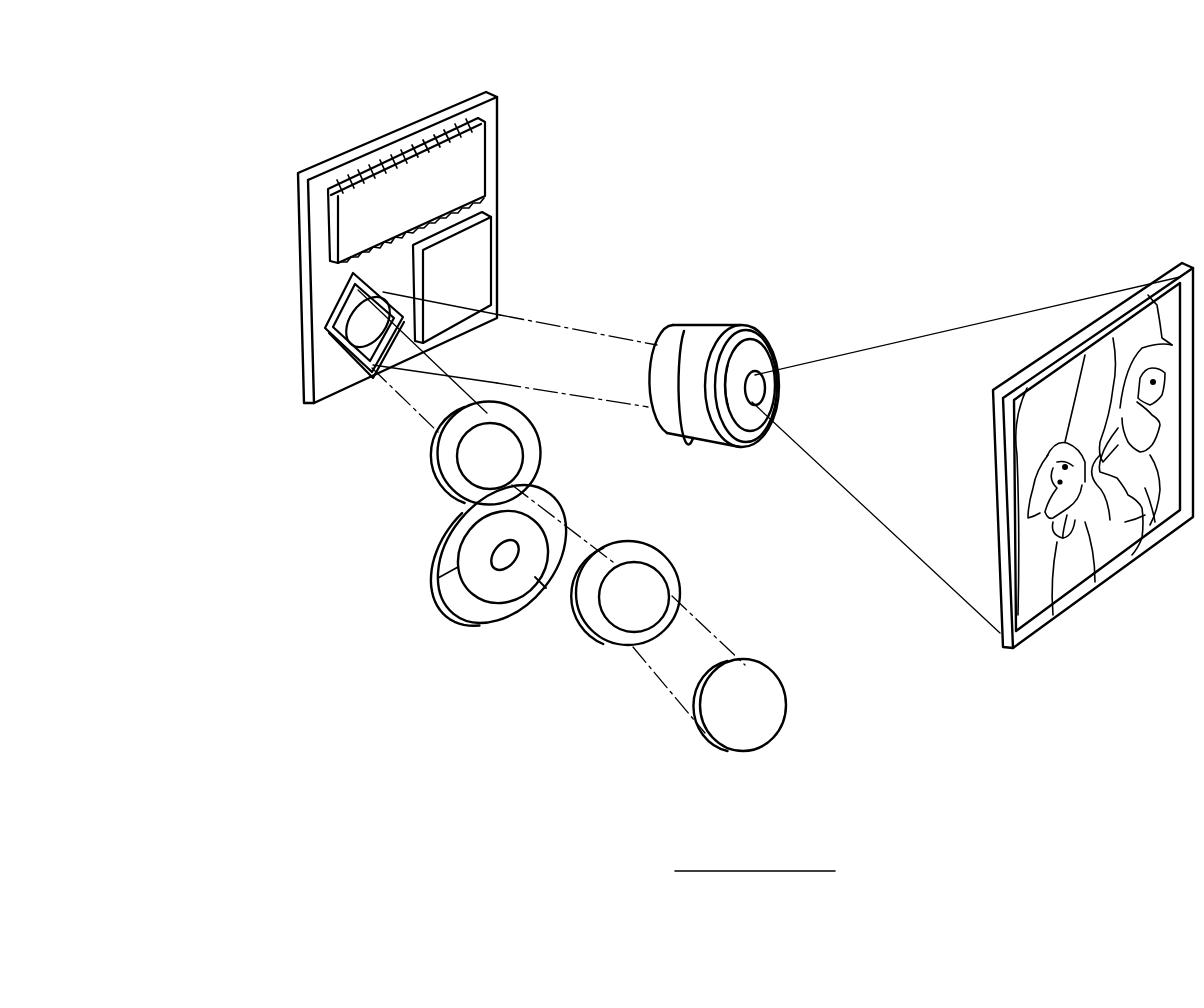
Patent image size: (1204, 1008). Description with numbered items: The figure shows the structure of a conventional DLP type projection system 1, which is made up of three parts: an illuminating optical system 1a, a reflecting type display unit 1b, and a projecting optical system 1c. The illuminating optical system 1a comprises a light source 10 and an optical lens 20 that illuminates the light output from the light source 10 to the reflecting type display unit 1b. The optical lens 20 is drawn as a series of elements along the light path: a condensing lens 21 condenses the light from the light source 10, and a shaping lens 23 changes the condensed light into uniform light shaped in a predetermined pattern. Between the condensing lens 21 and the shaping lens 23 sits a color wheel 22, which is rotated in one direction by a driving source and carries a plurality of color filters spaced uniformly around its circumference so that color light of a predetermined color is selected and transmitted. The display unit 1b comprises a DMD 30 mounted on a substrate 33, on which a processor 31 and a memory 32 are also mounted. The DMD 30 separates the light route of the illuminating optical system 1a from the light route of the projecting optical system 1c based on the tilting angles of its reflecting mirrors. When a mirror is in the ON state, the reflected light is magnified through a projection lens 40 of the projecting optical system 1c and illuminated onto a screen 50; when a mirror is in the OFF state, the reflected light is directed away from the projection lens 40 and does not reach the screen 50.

The DLP type projection system 1 is at (992, 135).
The illuminating optical system 1a is at (420, 758).
The reflecting type display unit 1b is at (260, 160).
The projecting optical system 1c is at (830, 300).
The light source 10 is at (722, 732).
The optical lens 20 is at (397, 607).
The condensing lens 21 is at (600, 632).
The color wheel 22 is at (463, 607).
The shaping lens 23 is at (450, 492).
The DMD 30 is at (337, 342).
The processor 31 is at (475, 160).
The memory 32 is at (483, 258).
The substrate 33 is at (400, 130).
The projection lens 40 is at (728, 330).
The screen 50 is at (1097, 578).